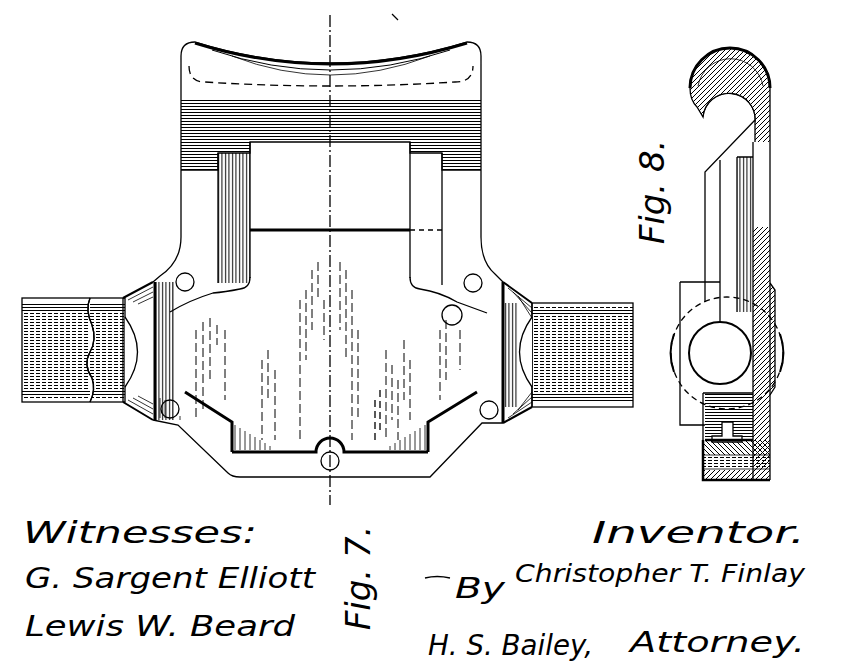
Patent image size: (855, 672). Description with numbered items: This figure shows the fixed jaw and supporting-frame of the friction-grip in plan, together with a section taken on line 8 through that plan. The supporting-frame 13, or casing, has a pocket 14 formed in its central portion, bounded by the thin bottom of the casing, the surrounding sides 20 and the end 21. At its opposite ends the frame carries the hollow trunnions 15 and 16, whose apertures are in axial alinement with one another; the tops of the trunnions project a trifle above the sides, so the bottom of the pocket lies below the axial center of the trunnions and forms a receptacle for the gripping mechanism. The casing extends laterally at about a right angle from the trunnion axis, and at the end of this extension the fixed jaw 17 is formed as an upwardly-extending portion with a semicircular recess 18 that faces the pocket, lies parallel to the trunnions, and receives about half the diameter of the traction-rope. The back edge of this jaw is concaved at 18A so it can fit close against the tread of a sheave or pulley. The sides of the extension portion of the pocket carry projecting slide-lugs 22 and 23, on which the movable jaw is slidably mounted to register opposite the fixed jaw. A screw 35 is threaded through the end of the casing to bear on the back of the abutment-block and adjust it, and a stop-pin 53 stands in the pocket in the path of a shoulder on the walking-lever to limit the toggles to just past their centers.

In FIG. 7, the section line 8 is at (322, 32).
In FIG. 7, the supporting-frame 13 is at (290, 470).
In FIG. 8, the supporting-frame 13 is at (777, 437).
In FIG. 7, the pocket 14 is at (335, 276).
In FIG. 8, the pocket 14 is at (712, 422).
In FIG. 7, the trunnion 15 is at (88, 298).
In FIG. 8, the trunnion 15 is at (680, 355).
In FIG. 7, the trunnion 16 is at (567, 303).
In FIG. 7, the fixed jaw 17 is at (262, 78).
In FIG. 8, the fixed jaw 17 is at (700, 73).
In FIG. 8, the semicircular recess 18 is at (721, 92).
In FIG. 7, the concaved back edge 18A is at (369, 64).
In FIG. 7, the sides 20 is at (213, 292).
In FIG. 8, the sides 20 is at (745, 400).
In FIG. 7, the end 21 is at (384, 436).
In FIG. 8, the end 21 is at (700, 248).
In FIG. 7, the slide-lug 22 is at (259, 207).
In FIG. 8, the slide-lug 22 is at (727, 202).
In FIG. 7, the slide-lug 23 is at (410, 198).
In FIG. 7, the screw 35 is at (402, 10).
In FIG. 7, the stop-pin 53 is at (442, 316).